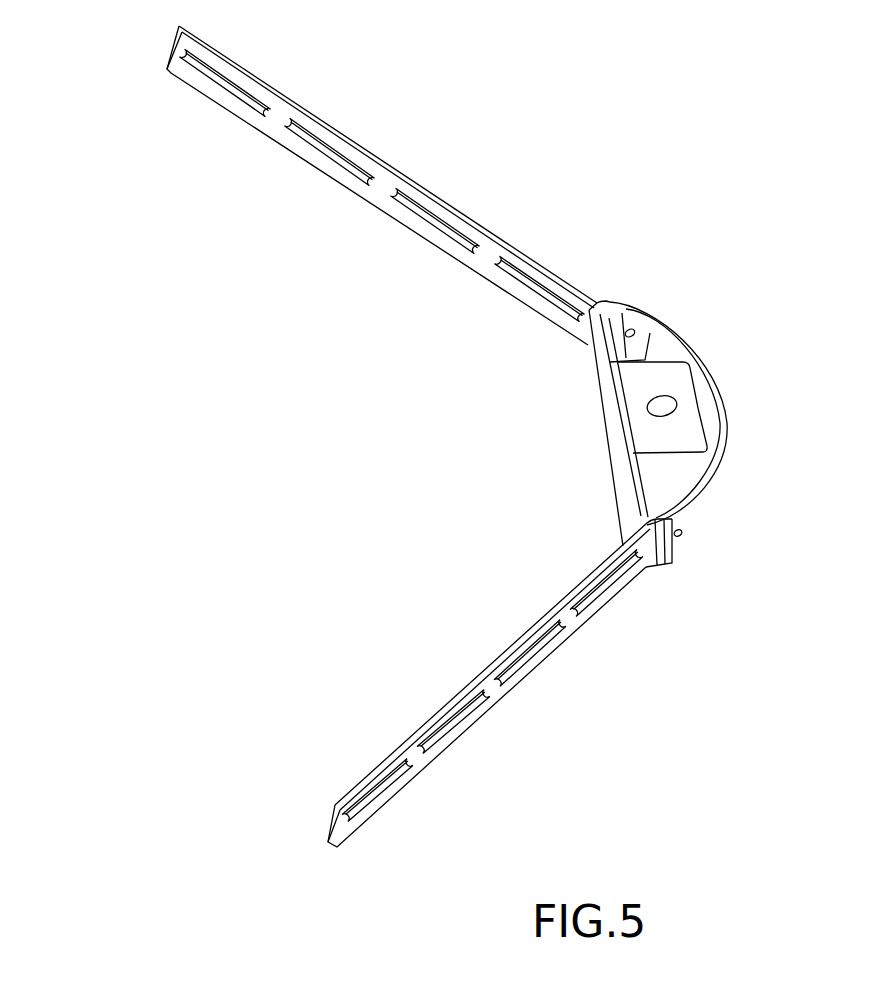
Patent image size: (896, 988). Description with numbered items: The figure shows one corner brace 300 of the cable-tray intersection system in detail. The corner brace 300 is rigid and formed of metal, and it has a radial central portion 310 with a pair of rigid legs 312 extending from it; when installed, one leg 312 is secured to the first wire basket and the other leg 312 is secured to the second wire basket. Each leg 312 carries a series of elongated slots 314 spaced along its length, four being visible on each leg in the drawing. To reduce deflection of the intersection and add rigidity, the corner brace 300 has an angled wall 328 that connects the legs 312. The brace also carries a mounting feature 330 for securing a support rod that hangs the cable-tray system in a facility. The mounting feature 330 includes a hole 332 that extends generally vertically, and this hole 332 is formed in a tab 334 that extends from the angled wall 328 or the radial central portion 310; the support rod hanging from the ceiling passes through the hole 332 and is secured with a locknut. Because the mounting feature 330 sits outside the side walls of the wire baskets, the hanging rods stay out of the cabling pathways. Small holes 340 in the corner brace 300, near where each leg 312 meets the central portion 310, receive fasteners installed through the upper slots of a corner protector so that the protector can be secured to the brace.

The corner brace 300 is at (658, 137).
The radial central portion 310 is at (685, 336).
The leg 312 is at (352, 178).
The slot 314 is at (222, 85).
The angled wall 328 is at (615, 448).
The mounting feature 330 is at (685, 436).
The hole 332 is at (662, 407).
The tab 334 is at (667, 382).
The hole 340 is at (633, 330).